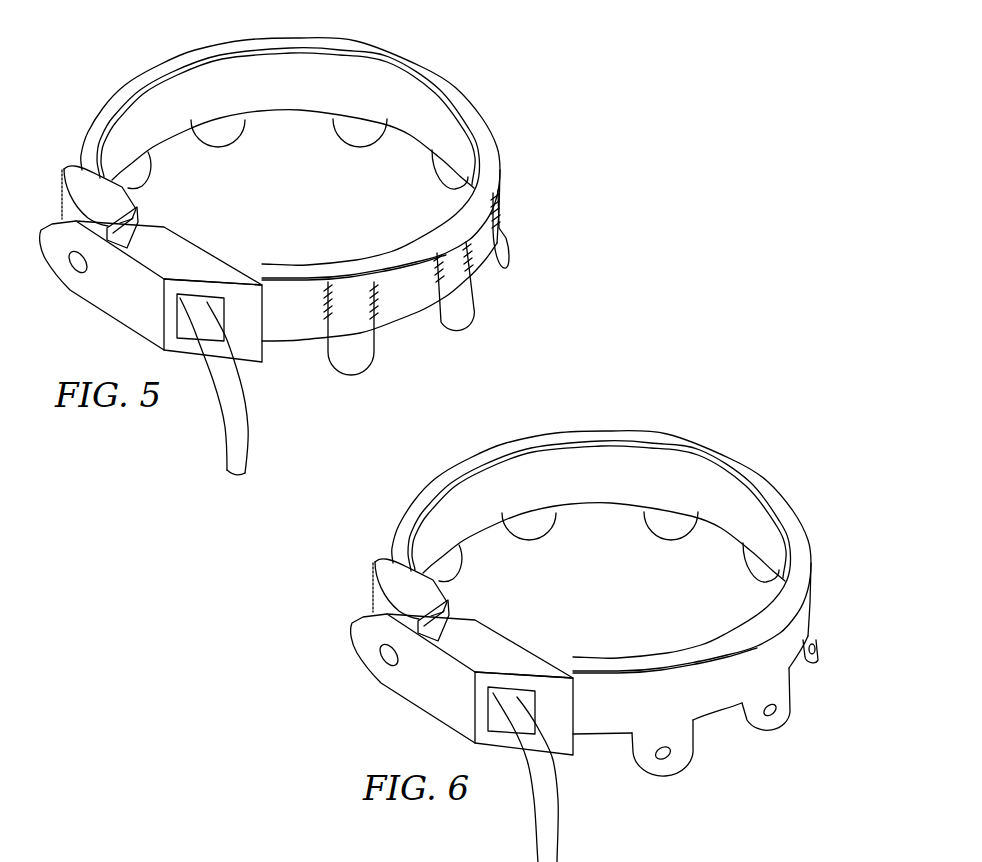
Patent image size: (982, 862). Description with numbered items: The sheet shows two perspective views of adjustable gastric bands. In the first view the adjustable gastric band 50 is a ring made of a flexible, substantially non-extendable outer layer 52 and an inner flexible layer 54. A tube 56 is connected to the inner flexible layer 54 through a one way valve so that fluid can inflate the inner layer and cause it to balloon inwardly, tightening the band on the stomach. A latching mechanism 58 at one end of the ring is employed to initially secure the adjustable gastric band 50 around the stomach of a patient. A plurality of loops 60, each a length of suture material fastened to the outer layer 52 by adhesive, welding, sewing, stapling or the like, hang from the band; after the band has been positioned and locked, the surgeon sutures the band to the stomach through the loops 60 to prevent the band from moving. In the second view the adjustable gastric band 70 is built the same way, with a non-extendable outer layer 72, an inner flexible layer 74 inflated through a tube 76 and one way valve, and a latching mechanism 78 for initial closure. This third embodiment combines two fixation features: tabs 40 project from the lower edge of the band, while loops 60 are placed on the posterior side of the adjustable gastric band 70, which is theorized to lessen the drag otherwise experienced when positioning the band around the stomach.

In FIG. 5, the adjustable gastric band 50 is at (131, 71).
In FIG. 5, the outer layer 52 is at (282, 326).
In FIG. 5, the inner flexible layer 54 is at (200, 80).
In FIG. 5, the tube 56 is at (227, 421).
In FIG. 5, the latching mechanism 58 is at (42, 236).
In FIG. 5, the loops 60 is at (143, 178).
In FIG. 6, the loops 60 is at (609, 562).
In FIG. 6, the adjustable gastric band 70 is at (583, 636).
In FIG. 6, the outer layer 72 is at (601, 613).
In FIG. 6, the inner flexible layer 74 is at (599, 534).
In FIG. 6, the tube 76 is at (555, 777).
In FIG. 6, the latching mechanism 78 is at (432, 657).
In FIG. 6, the tabs 40 is at (753, 723).